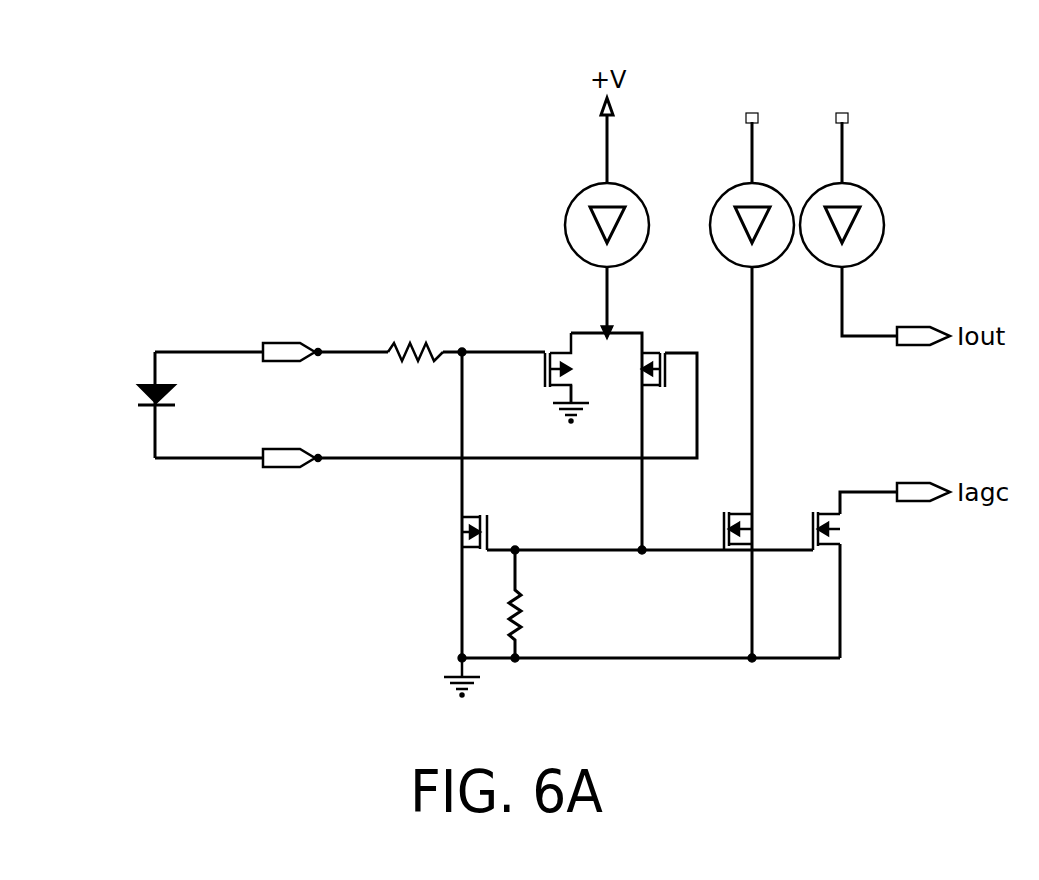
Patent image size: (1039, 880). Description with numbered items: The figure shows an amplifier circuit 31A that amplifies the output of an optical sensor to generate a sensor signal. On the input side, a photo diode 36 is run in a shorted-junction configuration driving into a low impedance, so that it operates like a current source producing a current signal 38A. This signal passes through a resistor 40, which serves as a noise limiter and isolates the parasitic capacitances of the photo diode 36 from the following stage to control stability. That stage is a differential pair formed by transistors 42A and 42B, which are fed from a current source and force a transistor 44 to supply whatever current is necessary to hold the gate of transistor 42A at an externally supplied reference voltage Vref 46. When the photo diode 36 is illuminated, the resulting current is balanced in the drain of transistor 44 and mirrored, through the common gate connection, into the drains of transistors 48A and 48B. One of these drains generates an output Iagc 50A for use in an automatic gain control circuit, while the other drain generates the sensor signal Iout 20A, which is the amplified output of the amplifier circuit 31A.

The amplifier circuit 31A is at (325, 112).
The photo diode 36 is at (142, 370).
The current signal 38A is at (289, 297).
The resistor 40 is at (412, 330).
The transistor 42A is at (556, 337).
The transistor 42B is at (656, 337).
The transistor 44 is at (450, 534).
The reference voltage Vref 46 is at (287, 507).
The transistor 48A is at (731, 563).
The transistor 48B is at (850, 540).
The sensor signal Iout 20A is at (928, 332).
The output Iagc 50A is at (915, 488).